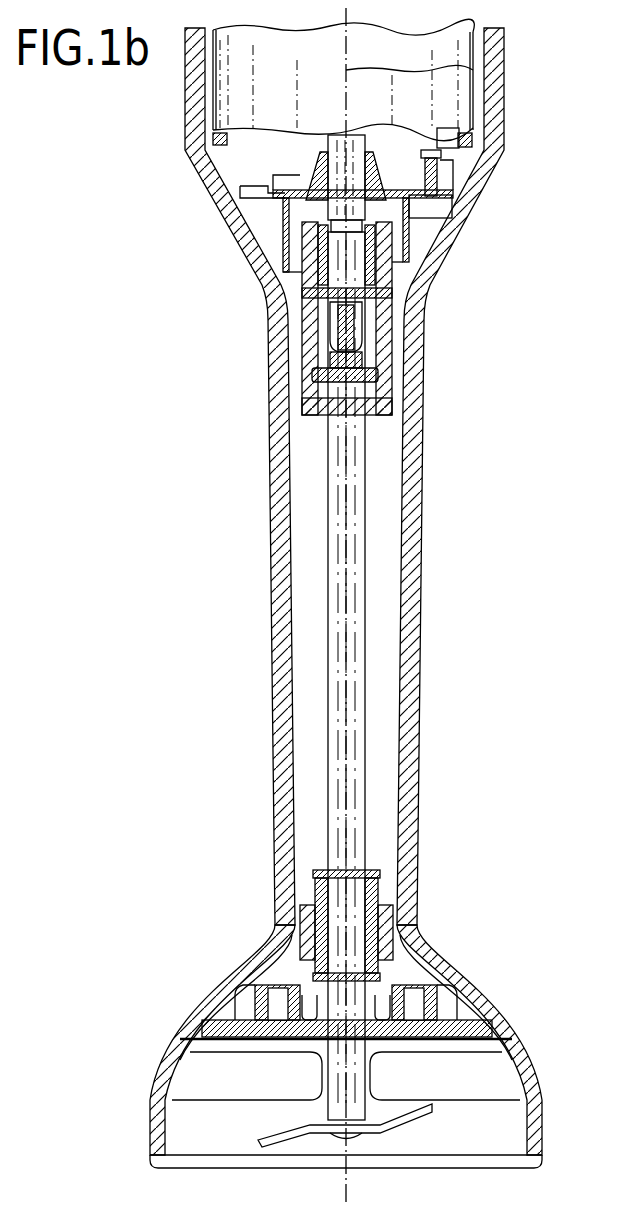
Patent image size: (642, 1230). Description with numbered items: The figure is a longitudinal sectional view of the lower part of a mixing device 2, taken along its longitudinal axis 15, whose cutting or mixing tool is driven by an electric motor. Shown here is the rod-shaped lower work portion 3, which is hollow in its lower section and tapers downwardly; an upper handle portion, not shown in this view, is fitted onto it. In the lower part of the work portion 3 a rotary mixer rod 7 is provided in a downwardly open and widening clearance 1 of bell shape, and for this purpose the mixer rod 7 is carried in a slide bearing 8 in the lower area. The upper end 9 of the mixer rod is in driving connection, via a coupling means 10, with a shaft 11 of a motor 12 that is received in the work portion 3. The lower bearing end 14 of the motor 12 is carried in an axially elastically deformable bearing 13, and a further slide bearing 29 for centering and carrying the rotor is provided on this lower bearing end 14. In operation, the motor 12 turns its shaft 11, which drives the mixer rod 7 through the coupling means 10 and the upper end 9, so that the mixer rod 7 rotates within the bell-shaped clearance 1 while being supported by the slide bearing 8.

The clearance 1 is at (480, 1090).
The mixing device 2 is at (250, 505).
The work portion 3 is at (275, 790).
The mixer rod 7 is at (335, 1143).
The slide bearing 8 is at (375, 897).
The upper end of the mixer rod 9 is at (358, 330).
The coupling means 10 is at (385, 297).
The shaft 11 is at (355, 208).
The motor 12 is at (437, 103).
The axially elastically deformable bearing 13 is at (438, 207).
The lower bearing end 14 is at (462, 182).
The longitudinal axis 15 is at (473, 70).
The slide bearing 29 is at (275, 200).